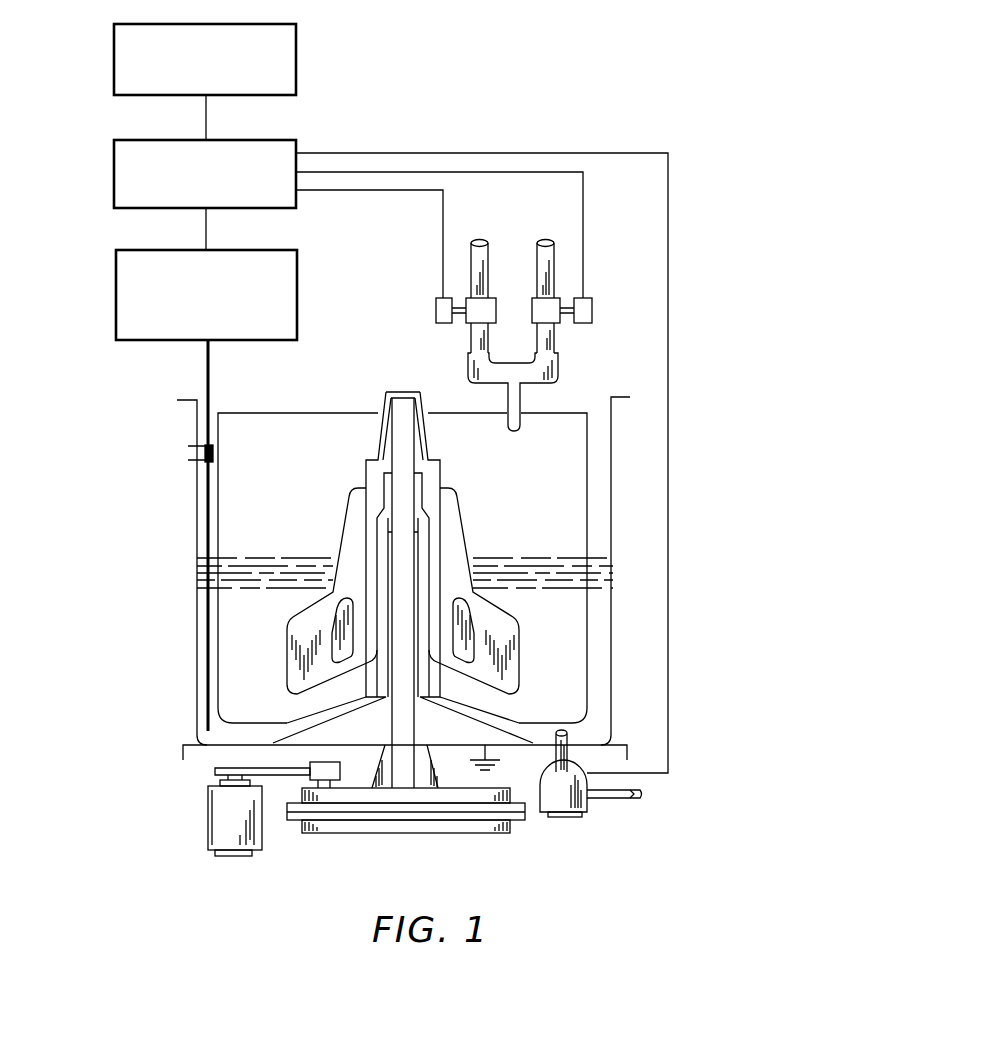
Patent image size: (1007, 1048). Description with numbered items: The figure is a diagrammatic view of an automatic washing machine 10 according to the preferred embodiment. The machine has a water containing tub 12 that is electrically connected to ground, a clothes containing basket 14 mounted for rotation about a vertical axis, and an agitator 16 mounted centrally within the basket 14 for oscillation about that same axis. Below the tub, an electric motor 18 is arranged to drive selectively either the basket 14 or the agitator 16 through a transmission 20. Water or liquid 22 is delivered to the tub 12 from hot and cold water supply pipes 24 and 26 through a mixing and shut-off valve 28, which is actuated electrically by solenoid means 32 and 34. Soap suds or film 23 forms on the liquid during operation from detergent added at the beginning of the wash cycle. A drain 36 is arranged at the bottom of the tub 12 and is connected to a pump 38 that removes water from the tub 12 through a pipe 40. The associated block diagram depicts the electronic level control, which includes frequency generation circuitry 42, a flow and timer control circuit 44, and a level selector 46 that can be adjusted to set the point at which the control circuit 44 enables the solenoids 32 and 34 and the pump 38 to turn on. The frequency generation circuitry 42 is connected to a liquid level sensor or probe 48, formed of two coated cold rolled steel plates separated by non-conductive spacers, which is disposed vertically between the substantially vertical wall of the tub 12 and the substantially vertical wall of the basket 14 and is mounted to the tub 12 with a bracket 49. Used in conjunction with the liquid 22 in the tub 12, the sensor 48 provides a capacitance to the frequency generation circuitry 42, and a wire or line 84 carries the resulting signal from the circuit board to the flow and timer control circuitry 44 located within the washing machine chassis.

The automatic washing machine 10 is at (126, 452).
The water containing tub 12 is at (197, 498).
The clothes containing basket 14 is at (218, 693).
The agitator 16 is at (352, 520).
The electric motor 18 is at (215, 812).
The transmission 20 is at (378, 825).
The water or liquid 22 is at (569, 634).
The soap suds or film 23 is at (504, 558).
The hot water supply pipe 24 is at (479, 243).
The cold water supply pipe 26 is at (545, 243).
The mixing and shut-off valve 28 is at (559, 372).
The solenoid means 32 is at (435, 311).
The solenoid means 34 is at (593, 311).
The drain 36 is at (562, 732).
The pump 38 is at (553, 815).
The pipe 40 is at (645, 794).
The frequency generation circuitry 42 is at (172, 249).
The flow and timer control circuit 44 is at (170, 139).
The level selector 46 is at (170, 24).
The liquid level sensor or probe 48 is at (207, 648).
The bracket 49 is at (206, 445).
The wire or line 84 is at (207, 247).